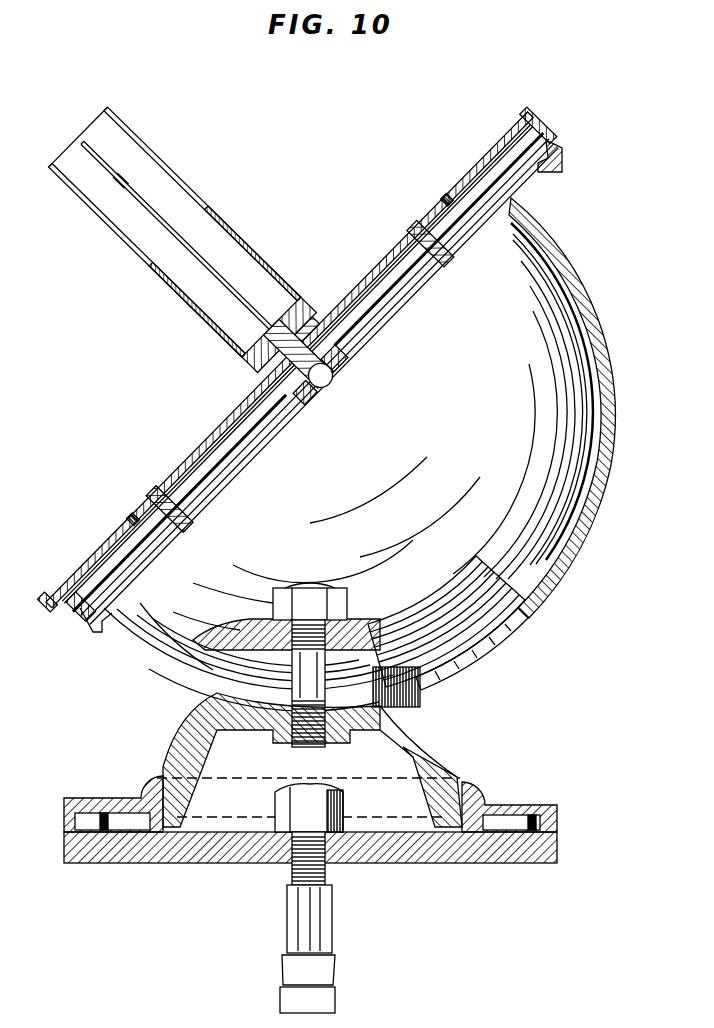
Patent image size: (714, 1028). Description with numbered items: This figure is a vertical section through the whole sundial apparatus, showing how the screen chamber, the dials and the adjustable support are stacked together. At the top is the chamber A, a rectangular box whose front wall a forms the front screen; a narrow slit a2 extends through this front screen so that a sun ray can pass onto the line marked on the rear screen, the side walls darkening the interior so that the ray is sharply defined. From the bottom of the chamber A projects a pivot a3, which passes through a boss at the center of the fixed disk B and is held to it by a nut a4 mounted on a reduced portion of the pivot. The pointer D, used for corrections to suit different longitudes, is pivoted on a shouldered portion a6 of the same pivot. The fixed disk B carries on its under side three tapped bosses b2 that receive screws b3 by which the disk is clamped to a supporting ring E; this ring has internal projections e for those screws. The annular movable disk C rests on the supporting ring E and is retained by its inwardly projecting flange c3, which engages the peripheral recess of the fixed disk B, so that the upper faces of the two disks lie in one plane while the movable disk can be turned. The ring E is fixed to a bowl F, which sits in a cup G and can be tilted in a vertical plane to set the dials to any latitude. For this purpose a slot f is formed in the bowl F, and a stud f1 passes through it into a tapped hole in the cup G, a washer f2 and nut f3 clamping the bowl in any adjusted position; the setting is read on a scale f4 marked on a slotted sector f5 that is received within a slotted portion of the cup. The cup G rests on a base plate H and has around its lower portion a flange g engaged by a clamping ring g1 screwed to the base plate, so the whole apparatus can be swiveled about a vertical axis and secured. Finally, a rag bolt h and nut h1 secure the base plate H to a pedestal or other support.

The chamber A is at (175, 198).
The front wall a is at (177, 235).
The narrow slit a2 is at (121, 182).
The pivot a3 is at (297, 402).
The nut a4 is at (324, 387).
The shouldered portion a6 is at (297, 327).
The fixed disk B is at (367, 277).
The tapped bosses b2 is at (163, 503).
The screws b3 is at (333, 362).
The movable disk C is at (477, 158).
The flange c3 is at (126, 513).
The pointer D is at (262, 366).
The supporting ring E is at (363, 329).
The internal projections e is at (458, 232).
The bowl F is at (598, 333).
The slot f is at (207, 693).
The stud f1 is at (355, 620).
The washer f2 is at (250, 637).
The nut f3 is at (312, 600).
The scale f4 is at (490, 650).
The slotted sector f5 is at (138, 642).
The cup G is at (420, 705).
The flange g is at (160, 823).
The clamping ring g1 is at (157, 797).
The base plate H is at (417, 852).
The rag bolt h is at (300, 965).
The nut h1 is at (283, 813).